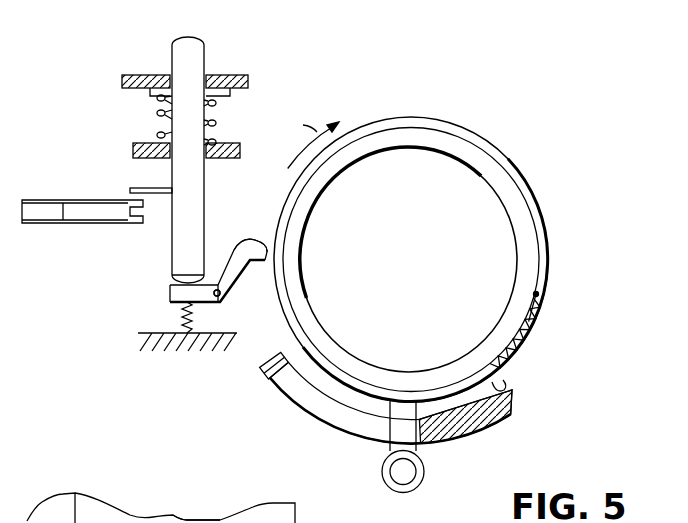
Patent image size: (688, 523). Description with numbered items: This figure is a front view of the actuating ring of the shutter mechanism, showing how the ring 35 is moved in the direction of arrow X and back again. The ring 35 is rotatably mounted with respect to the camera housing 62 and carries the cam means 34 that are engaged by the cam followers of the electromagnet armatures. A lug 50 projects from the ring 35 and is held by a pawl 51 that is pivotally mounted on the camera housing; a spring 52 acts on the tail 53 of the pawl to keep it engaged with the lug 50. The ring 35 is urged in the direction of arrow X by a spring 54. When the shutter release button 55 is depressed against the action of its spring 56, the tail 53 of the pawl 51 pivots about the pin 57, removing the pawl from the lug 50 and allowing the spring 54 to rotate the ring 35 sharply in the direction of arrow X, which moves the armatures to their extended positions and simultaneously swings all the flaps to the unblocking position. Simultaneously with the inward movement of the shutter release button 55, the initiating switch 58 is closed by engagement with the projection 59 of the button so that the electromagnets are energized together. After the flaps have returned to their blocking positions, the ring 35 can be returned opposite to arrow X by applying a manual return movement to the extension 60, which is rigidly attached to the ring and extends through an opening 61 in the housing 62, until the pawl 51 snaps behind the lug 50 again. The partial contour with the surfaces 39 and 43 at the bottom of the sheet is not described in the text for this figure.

The cam means 34 is at (487, 180).
The ring 35 is at (544, 219).
The cam surface 39 is at (183, 519).
The cam lobe 43 is at (153, 520).
The lug 50 is at (265, 285).
The pawl 51 is at (252, 241).
The spring 52 is at (180, 312).
The tail 53 is at (170, 290).
The spring 54 is at (503, 378).
The shutter release button 55 is at (205, 52).
The spring 56 is at (157, 113).
The pin 57 is at (217, 303).
The initiating switch 58 is at (81, 233).
The projection 59 is at (146, 188).
The extension 60 is at (396, 441).
The opening 61 is at (318, 420).
The camera housing 62 is at (248, 80).